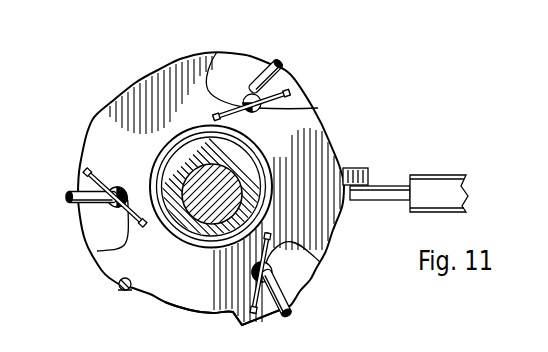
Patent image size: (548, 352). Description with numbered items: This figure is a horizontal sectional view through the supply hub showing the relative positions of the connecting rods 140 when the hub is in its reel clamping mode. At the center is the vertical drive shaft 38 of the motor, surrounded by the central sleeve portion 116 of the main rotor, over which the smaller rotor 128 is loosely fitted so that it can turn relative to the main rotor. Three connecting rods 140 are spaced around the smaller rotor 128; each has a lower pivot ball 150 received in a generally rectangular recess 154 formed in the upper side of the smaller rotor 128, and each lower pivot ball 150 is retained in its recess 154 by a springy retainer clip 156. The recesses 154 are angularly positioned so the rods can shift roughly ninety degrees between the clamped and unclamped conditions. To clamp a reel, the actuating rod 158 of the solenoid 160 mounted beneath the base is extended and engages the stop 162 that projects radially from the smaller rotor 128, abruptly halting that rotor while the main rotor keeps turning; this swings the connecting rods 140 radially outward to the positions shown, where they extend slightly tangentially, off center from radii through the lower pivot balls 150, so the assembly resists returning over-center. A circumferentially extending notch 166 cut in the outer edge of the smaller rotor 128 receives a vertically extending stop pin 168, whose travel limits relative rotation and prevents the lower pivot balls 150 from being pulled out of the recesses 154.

The drive shaft 38 is at (222, 180).
The central sleeve portion 116 is at (202, 145).
The smaller rotor 128 is at (139, 84).
The connecting rods 140 is at (284, 62).
The lower pivot balls 150 is at (246, 96).
The recesses 154 is at (225, 68).
The springy retainer clips 156 is at (287, 93).
The actuating rod 158 is at (372, 195).
The solenoid 160 is at (428, 183).
The stop 162 is at (367, 168).
The notch 166 is at (187, 311).
The stop pin 168 is at (121, 291).